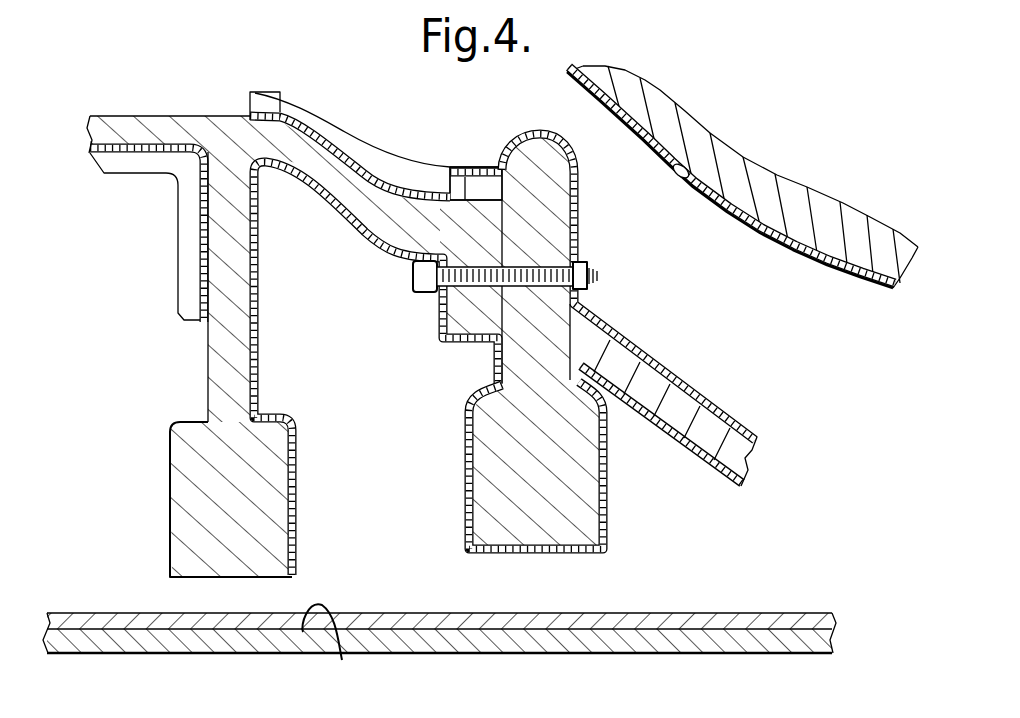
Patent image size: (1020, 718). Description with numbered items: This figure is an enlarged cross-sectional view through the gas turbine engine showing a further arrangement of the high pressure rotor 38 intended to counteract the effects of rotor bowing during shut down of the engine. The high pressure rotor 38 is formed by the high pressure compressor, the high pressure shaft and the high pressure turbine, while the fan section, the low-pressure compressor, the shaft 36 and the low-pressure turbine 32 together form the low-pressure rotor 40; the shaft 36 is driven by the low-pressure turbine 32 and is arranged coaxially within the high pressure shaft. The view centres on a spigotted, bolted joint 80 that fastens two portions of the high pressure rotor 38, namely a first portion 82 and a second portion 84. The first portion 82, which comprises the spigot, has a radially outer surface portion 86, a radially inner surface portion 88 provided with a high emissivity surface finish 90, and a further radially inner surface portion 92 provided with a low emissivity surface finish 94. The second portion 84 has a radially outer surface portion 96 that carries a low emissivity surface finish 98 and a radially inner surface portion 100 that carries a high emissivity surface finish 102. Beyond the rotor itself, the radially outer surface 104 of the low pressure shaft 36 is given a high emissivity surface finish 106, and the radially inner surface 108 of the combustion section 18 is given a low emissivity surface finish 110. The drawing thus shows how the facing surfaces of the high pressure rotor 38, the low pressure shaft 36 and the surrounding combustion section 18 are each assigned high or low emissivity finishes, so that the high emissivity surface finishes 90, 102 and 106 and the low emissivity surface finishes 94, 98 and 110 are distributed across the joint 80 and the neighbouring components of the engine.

The combustion section 18 is at (805, 188).
The low-pressure turbine 32 is at (757, 452).
The shaft 36 is at (438, 652).
The high-pressure rotor 38 is at (628, 547).
The low-pressure rotor 40 is at (569, 662).
The spigotted bolted joint 80 is at (481, 258).
The first portion 82 is at (373, 240).
The second portion 84 is at (545, 256).
The radially outer surface portion 86 is at (359, 137).
The radially inner surface portion 88 is at (170, 198).
The high emissivity surface finish 90 is at (276, 112).
The radially inner surface portion 92 is at (343, 214).
The low emissivity surface finish 94 is at (280, 265).
The radially outer surface portion 96 is at (540, 152).
The low emissivity surface finish 98 is at (670, 371).
The radially inner surface portion 100 is at (464, 457).
The high emissivity surface finish 102 is at (549, 552).
The radially outer surface 104 is at (336, 650).
The high emissivity surface finish 106 is at (120, 623).
The radially inner surface 108 is at (689, 168).
The low emissivity surface finish 110 is at (738, 218).